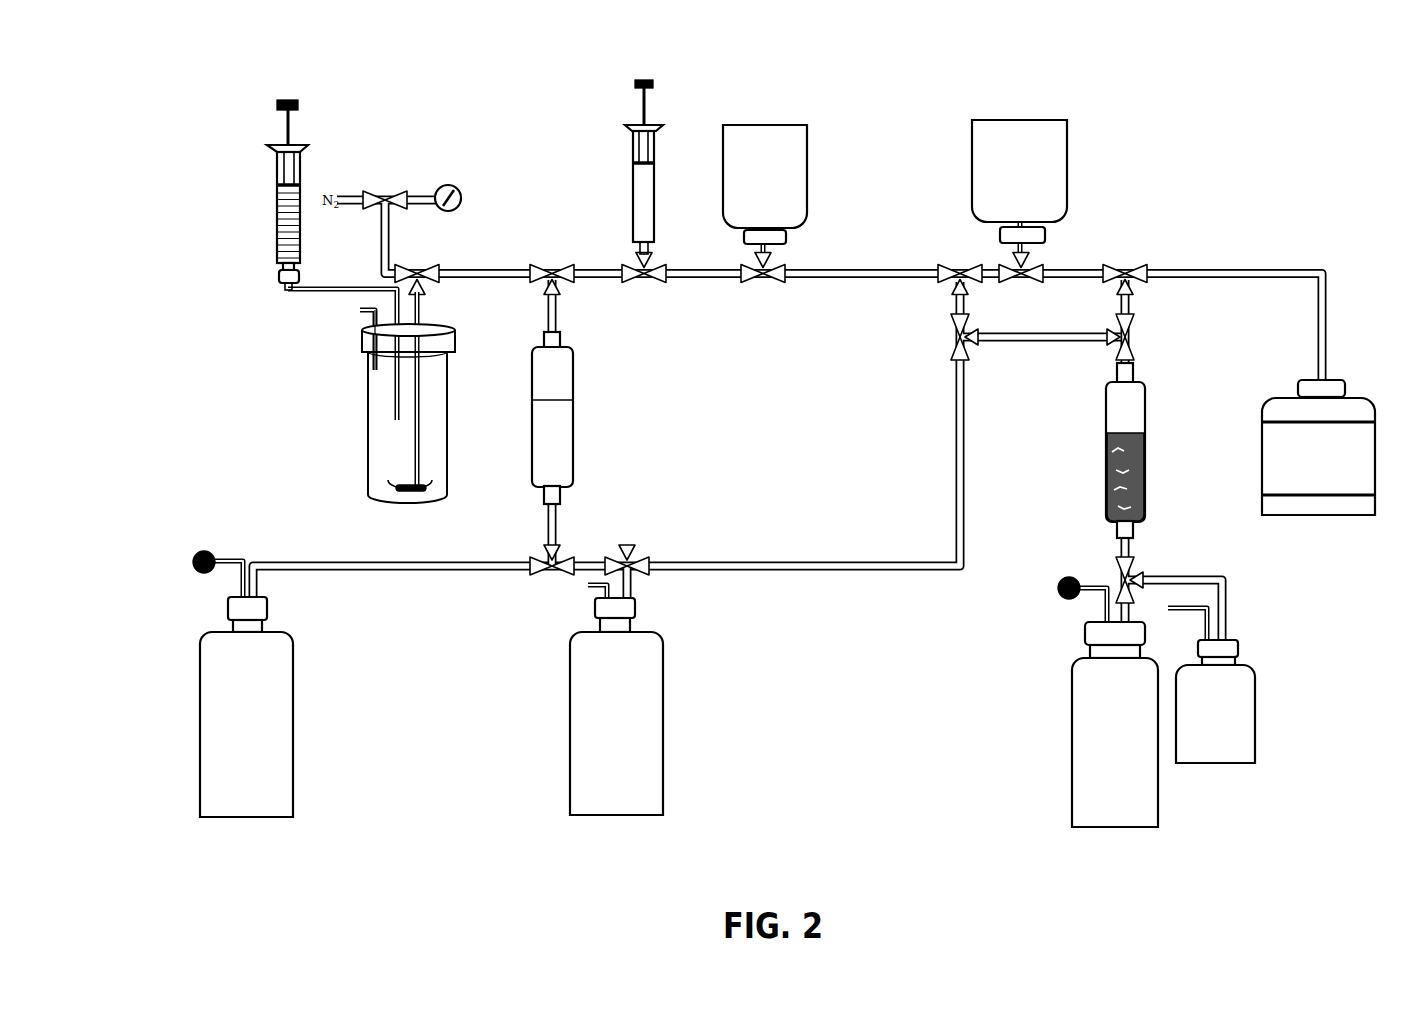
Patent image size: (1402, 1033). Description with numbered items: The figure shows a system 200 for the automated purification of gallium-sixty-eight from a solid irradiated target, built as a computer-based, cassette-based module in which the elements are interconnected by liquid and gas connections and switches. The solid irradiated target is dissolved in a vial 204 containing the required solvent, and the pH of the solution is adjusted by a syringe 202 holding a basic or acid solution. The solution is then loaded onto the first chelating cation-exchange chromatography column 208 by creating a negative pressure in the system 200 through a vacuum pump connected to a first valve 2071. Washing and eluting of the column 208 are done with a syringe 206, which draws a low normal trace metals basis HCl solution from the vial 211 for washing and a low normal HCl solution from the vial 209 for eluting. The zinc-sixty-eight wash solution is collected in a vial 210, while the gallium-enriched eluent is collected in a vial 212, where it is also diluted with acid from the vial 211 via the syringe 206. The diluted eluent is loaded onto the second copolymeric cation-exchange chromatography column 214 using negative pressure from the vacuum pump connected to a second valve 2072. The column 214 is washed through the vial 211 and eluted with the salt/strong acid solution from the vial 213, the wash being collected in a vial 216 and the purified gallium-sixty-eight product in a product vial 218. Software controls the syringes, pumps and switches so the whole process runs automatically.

The system 200 is at (1152, 147).
The syringe 202 is at (262, 207).
The vial 204 is at (354, 461).
The syringe 206 is at (622, 207).
The first valve 2071 is at (180, 565).
The second valve 2072 is at (1042, 592).
The first chelating cation-exchange chromatography column 208 is at (582, 461).
The vial 209 is at (765, 184).
The vial 210 is at (246, 707).
The vial 211 is at (1318, 447).
The vial 212 is at (616, 706).
The vial 213 is at (1019, 181).
The second copolymeric cation-exchange chromatography column 214 is at (1160, 446).
The vial 216 is at (1115, 724).
The product vial 218 is at (1215, 701).